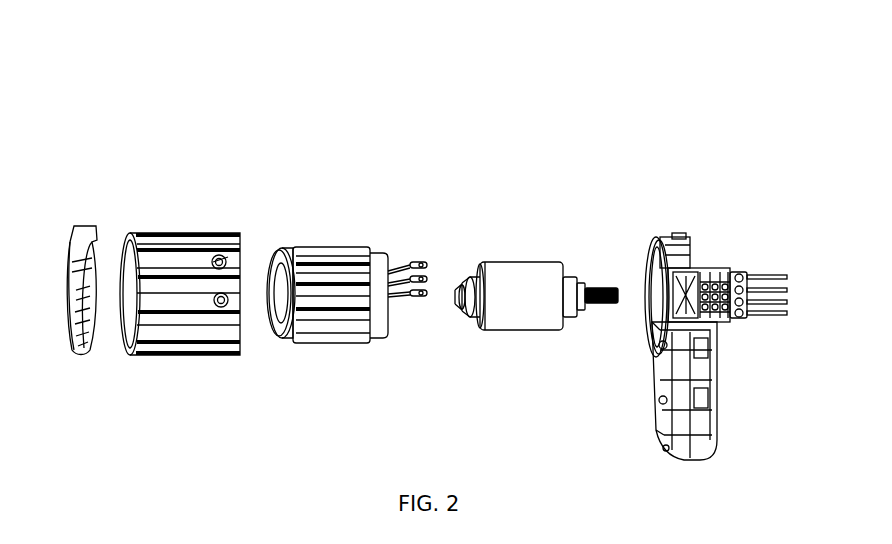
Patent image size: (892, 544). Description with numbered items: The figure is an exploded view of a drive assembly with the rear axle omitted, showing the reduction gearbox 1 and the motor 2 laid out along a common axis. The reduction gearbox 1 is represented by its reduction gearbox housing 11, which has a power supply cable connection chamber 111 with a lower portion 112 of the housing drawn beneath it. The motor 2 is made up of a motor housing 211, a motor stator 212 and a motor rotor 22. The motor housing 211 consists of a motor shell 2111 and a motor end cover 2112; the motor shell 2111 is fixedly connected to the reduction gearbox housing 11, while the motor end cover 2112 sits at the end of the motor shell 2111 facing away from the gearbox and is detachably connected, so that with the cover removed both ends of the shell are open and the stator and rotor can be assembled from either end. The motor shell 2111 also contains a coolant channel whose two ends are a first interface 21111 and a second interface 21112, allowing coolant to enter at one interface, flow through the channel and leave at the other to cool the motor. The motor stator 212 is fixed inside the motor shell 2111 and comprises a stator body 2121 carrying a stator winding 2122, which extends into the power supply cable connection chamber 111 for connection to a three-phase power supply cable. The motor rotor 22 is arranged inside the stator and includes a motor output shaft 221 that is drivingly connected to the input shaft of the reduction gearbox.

The reduction gearbox 1 is at (666, 237).
The reduction gearbox housing 11 is at (705, 265).
The power supply cable connection chamber 111 is at (740, 272).
The lower housing portion 112 is at (705, 330).
The motor 2 is at (516, 120).
The motor housing 211 is at (171, 168).
The motor shell 2111 is at (172, 232).
The first interface 21111 is at (216, 306).
The second interface 21112 is at (224, 263).
The motor end cover 2112 is at (82, 224).
The motor stator 212 is at (405, 196).
The stator body 2121 is at (311, 250).
The stator winding 2122 is at (403, 254).
The motor rotor 22 is at (510, 262).
The motor output shaft 221 is at (594, 288).